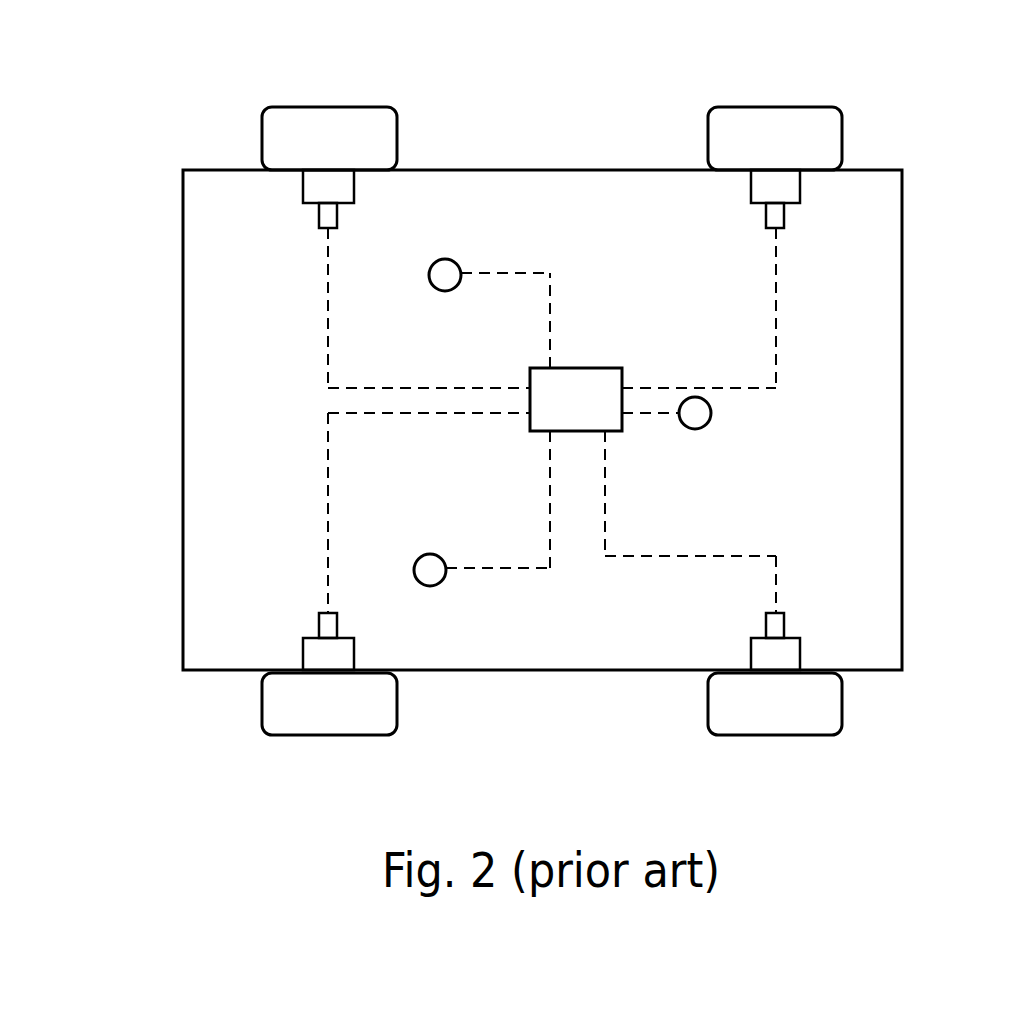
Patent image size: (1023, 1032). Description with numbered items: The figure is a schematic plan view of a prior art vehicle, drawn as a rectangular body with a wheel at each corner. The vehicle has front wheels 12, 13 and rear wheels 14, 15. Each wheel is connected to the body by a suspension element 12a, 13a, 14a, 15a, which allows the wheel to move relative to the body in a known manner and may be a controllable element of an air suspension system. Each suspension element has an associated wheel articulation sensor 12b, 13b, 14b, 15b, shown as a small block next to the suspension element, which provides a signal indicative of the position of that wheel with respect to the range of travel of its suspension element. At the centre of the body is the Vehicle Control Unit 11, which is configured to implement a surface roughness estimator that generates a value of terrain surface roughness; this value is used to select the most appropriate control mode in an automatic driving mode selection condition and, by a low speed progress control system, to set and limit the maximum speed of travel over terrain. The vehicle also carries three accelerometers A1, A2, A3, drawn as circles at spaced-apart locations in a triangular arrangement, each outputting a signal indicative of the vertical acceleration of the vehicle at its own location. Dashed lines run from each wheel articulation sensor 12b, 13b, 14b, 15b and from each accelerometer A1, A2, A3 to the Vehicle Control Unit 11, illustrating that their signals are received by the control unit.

The Vehicle Control Unit 11 is at (587, 380).
The front wheel 12 is at (775, 122).
The front wheel 13 is at (776, 720).
The rear wheel 14 is at (328, 122).
The rear wheel 15 is at (328, 720).
The suspension element 12a is at (776, 187).
The wheel articulation sensor 12b is at (776, 216).
The suspension element 13a is at (776, 654).
The wheel articulation sensor 13b is at (776, 626).
The suspension element 14a is at (328, 187).
The wheel articulation sensor 14b is at (328, 215).
The suspension element 15a is at (328, 654).
The wheel articulation sensor 15b is at (328, 626).
The accelerometer A1 is at (449, 259).
The accelerometer A2 is at (443, 573).
The accelerometer A3 is at (840, 432).